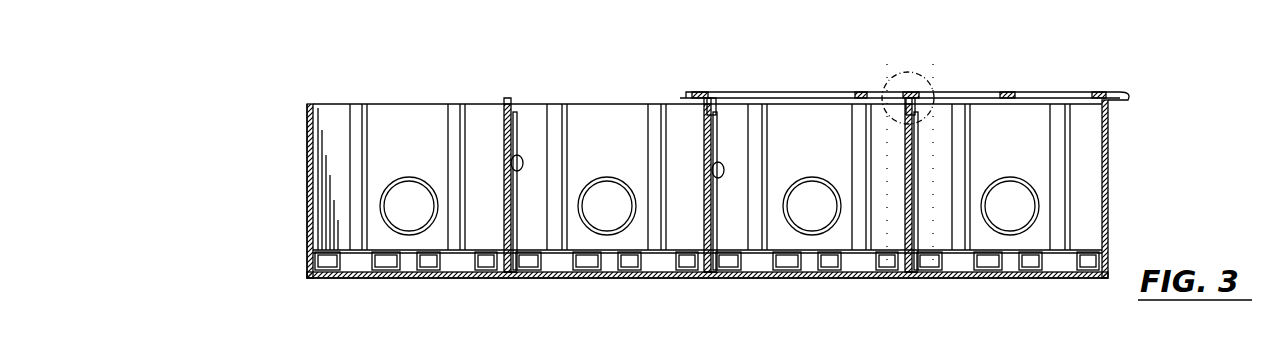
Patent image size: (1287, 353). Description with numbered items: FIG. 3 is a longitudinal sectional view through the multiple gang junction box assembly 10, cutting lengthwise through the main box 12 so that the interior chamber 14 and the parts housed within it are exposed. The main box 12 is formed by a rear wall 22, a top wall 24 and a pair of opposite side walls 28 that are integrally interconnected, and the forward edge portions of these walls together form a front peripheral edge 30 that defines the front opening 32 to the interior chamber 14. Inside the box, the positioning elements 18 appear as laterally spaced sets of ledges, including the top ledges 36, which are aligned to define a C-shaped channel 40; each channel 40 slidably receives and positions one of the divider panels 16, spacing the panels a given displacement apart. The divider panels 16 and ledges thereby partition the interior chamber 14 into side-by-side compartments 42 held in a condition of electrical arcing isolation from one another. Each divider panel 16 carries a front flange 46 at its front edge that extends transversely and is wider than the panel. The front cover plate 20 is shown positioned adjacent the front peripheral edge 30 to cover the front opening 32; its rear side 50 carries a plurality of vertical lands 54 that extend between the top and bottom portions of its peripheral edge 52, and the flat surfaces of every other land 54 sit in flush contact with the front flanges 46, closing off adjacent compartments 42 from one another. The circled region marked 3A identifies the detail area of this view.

The multiple gang junction box assembly 10 is at (418, 72).
The main box 12 is at (306, 150).
The interior chamber 14 is at (637, 108).
The divider panels 16 is at (514, 181).
The positioning elements 18 is at (516, 128).
The front cover plate 20 is at (1107, 94).
The rear wall 22 is at (412, 278).
The top wall 24 is at (420, 104).
The side walls 28 is at (309, 200).
The front peripheral edge 30 is at (590, 104).
The front opening 32 is at (380, 104).
The top ledges 36 is at (508, 232).
The C-shaped channel 40 is at (510, 163).
The compartments 42 is at (378, 232).
The front flange 46 is at (506, 104).
The rear side 50 is at (772, 98).
The peripheral edge 52 is at (1130, 100).
The vertical lands 54 is at (688, 96).
The detail view 3A is at (908, 74).